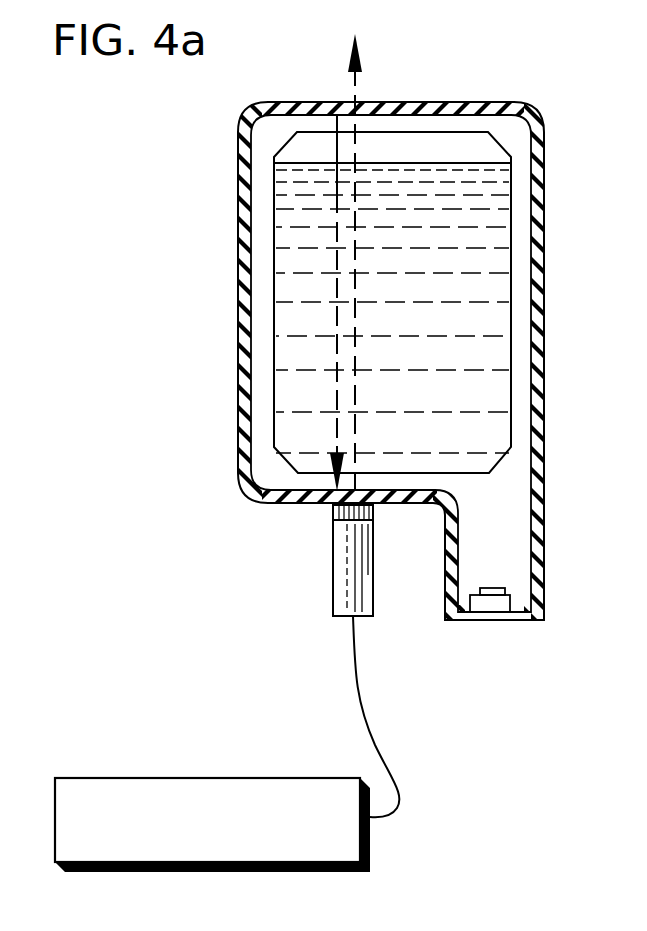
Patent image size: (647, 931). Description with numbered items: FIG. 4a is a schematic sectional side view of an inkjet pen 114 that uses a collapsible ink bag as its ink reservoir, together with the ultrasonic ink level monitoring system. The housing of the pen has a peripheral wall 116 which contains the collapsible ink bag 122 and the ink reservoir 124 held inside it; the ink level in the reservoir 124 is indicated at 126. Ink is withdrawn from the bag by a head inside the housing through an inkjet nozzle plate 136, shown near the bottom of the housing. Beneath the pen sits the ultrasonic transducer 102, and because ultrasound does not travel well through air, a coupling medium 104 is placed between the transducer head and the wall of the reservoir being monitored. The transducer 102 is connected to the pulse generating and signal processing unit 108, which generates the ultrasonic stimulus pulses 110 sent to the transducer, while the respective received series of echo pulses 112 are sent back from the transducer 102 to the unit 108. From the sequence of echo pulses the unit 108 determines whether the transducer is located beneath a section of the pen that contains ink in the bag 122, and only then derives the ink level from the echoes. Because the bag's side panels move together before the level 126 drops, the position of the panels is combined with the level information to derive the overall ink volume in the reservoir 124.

The ultrasonic transducer 102 is at (351, 566).
The coupling medium 104 is at (332, 513).
The pulse generating and signal processing unit 108 is at (222, 778).
The ultrasonic stimulus pulses 110 is at (357, 80).
The echo pulses 112 is at (336, 288).
The inkjet pen 114 is at (580, 304).
The peripheral wall 116 is at (538, 243).
The collapsible ink bag 122 is at (514, 200).
The ink reservoir 124 is at (490, 385).
The ink level 126 is at (421, 158).
The inkjet nozzle plate 136 is at (494, 609).